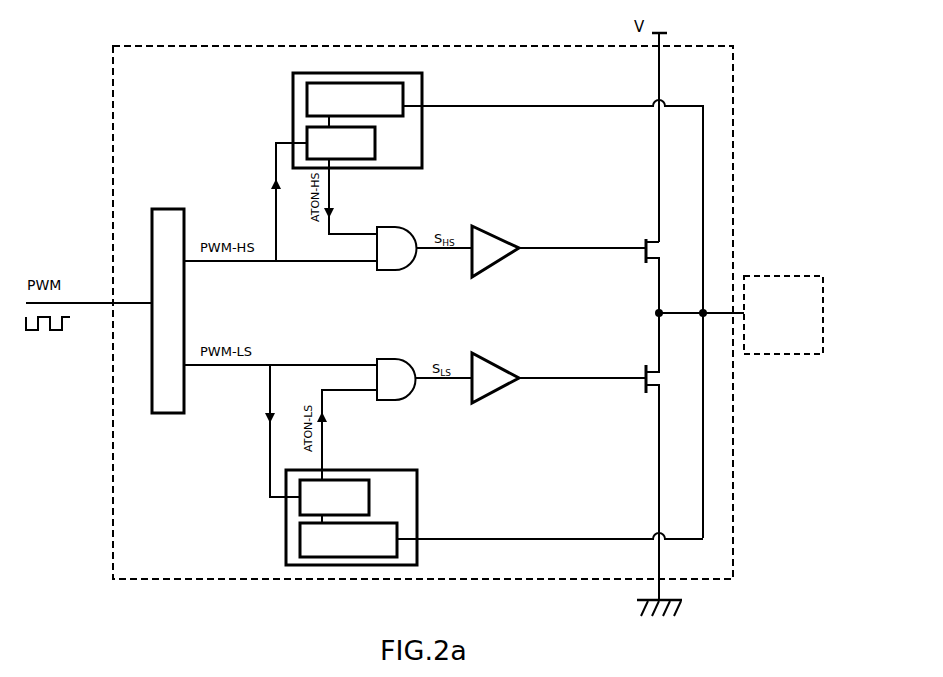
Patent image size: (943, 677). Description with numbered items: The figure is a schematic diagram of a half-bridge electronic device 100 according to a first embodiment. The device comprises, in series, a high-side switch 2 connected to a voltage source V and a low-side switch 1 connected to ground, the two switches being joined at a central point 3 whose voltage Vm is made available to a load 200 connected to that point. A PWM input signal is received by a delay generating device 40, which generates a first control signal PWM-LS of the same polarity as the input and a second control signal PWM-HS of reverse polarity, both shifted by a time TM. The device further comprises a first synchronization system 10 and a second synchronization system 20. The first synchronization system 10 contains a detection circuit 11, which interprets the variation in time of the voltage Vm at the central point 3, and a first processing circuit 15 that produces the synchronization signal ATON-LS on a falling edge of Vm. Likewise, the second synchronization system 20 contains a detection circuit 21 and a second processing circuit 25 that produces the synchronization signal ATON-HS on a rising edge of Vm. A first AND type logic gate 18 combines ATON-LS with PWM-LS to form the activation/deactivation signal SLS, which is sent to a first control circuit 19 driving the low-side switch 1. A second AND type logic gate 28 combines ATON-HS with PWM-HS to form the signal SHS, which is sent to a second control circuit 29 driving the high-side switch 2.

The half-bridge electronic device 100 is at (111, 469).
The load 200 is at (795, 273).
The delay generating device 40 is at (167, 208).
The second synchronization system 20 is at (327, 117).
The detection circuit 21 is at (355, 99).
The second processing circuit 25 is at (341, 143).
The second AND type logic gate 28 is at (392, 226).
The second control circuit 29 is at (487, 228).
The high-side switch 2 is at (640, 243).
The central point 3 is at (647, 310).
The low-side switch 1 is at (639, 364).
The first control circuit 19 is at (470, 352).
The first AND type logic gate 18 is at (387, 358).
The first synchronization system 10 is at (319, 517).
The first processing circuit 15 is at (334, 497).
The detection circuit 11 is at (348, 540).